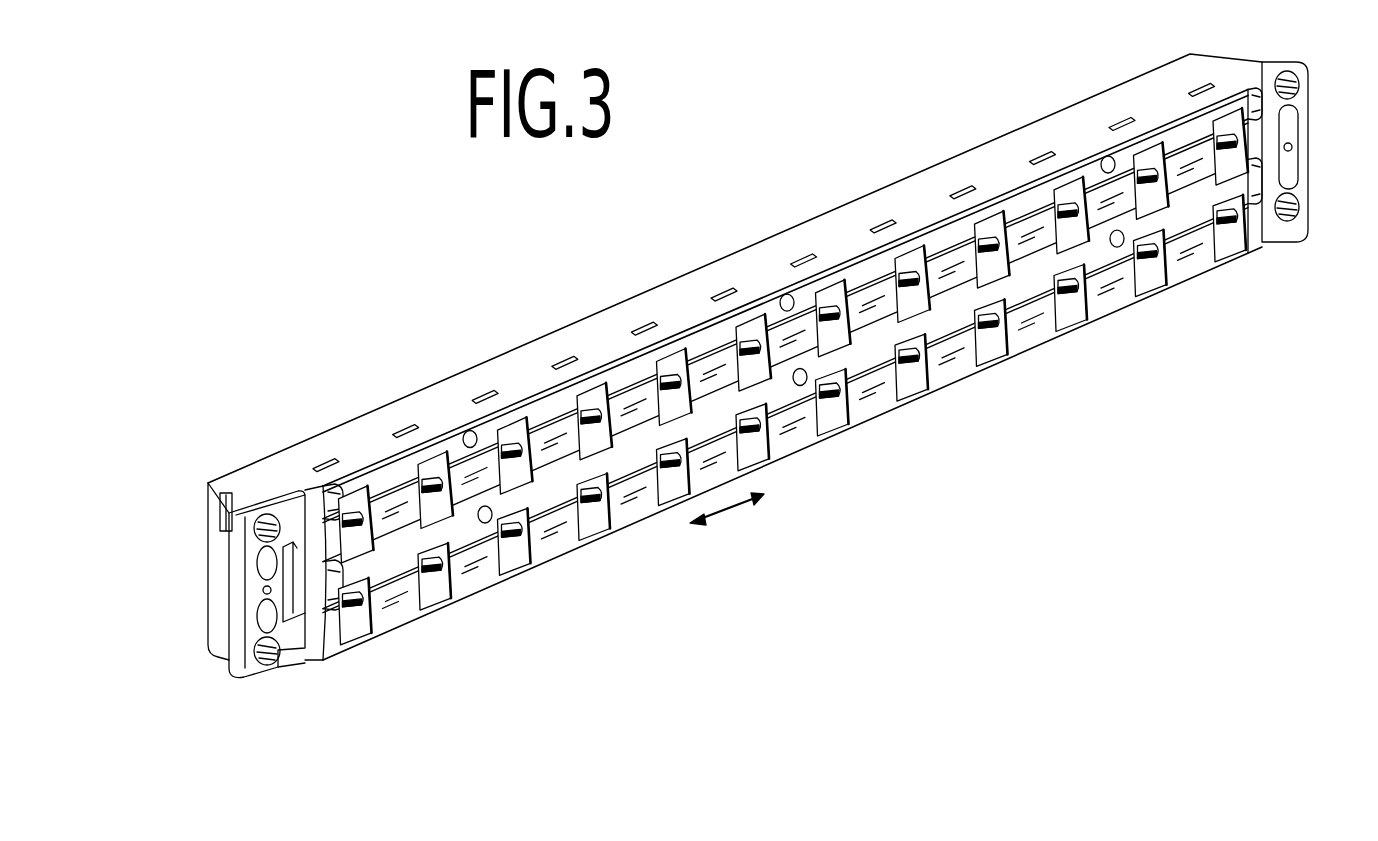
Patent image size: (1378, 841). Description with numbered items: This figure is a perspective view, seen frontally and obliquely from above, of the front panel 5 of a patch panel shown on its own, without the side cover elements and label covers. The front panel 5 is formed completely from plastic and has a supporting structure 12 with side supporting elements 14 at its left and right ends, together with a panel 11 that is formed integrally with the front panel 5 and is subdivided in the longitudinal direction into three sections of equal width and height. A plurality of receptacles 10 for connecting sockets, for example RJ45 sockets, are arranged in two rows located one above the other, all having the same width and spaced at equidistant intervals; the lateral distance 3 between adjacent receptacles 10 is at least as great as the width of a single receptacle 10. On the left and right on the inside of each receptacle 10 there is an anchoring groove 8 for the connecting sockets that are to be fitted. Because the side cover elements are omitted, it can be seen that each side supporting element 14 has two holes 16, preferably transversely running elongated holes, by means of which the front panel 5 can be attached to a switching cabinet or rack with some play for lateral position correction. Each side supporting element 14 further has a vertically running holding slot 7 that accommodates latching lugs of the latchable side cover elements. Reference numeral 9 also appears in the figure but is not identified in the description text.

The lateral distance 3 is at (731, 513).
The front panel 5 is at (538, 303).
The holding slot 7 is at (296, 540).
The anchoring groove 8 is at (588, 508).
The slot 9 is at (222, 514).
The receptacle 10 is at (794, 376).
The panel 11 is at (802, 433).
The supporting structure 12 is at (795, 240).
The side supporting element 14 is at (235, 632).
The hole 16 is at (268, 515).